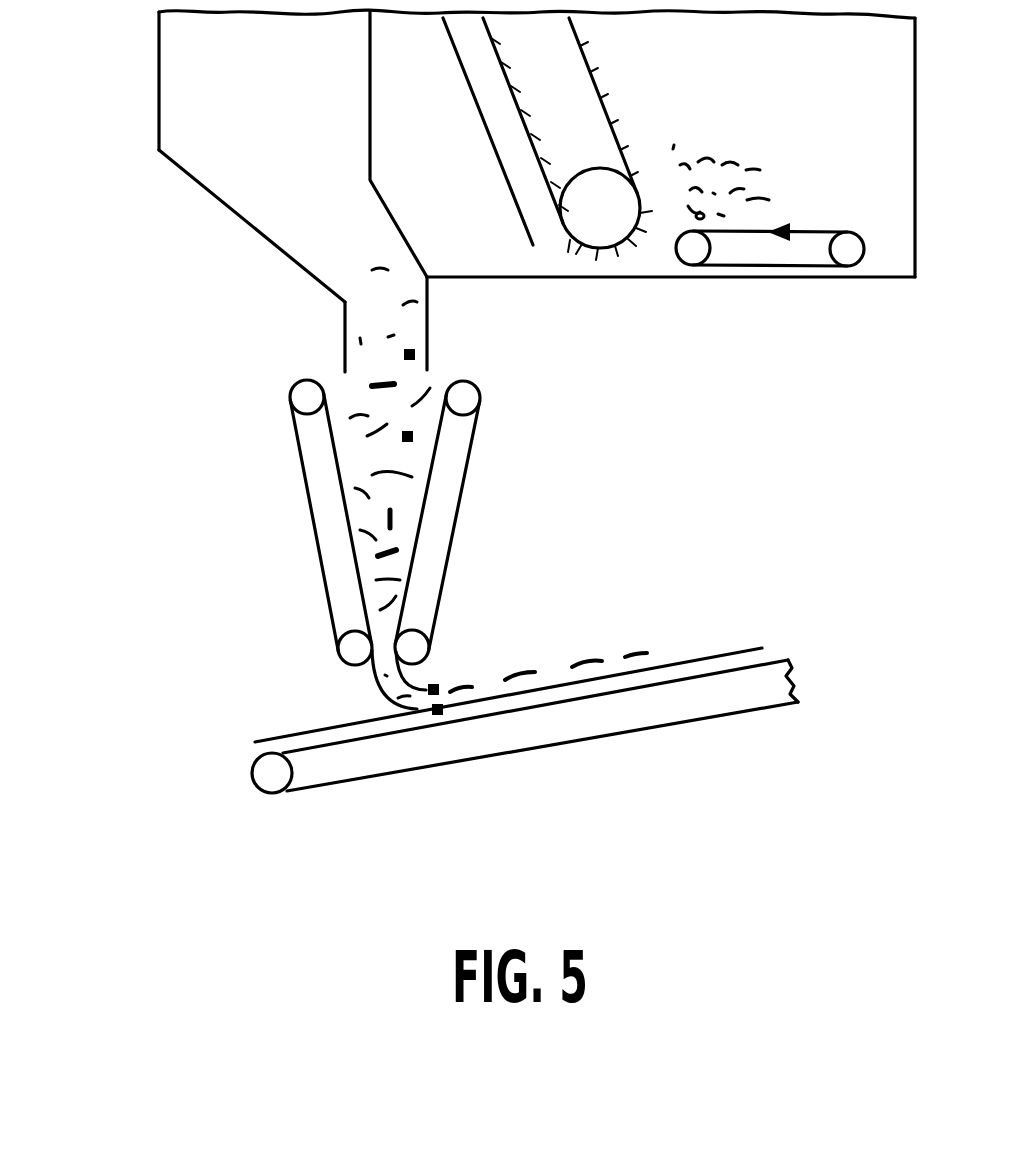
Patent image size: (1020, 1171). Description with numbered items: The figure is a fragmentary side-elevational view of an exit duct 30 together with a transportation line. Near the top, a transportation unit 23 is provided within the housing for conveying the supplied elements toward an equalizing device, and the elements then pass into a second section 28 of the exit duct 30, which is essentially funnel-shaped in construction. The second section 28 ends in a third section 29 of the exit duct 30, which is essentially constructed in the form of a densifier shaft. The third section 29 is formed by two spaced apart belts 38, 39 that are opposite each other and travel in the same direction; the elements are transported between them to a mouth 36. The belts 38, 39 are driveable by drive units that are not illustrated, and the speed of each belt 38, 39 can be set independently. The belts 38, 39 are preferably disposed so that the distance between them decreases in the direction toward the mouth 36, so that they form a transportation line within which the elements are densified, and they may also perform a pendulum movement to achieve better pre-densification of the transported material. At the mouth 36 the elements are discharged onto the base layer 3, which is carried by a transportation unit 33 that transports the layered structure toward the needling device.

The base layer 3 is at (700, 657).
The transportation unit 23 is at (812, 266).
The second section 28 is at (310, 240).
The third section 29 is at (480, 352).
The exit duct 30 is at (145, 222).
The transportation unit 33 is at (580, 740).
The mouth 36 is at (345, 686).
The belt 38 is at (498, 506).
The belt 39 is at (278, 521).